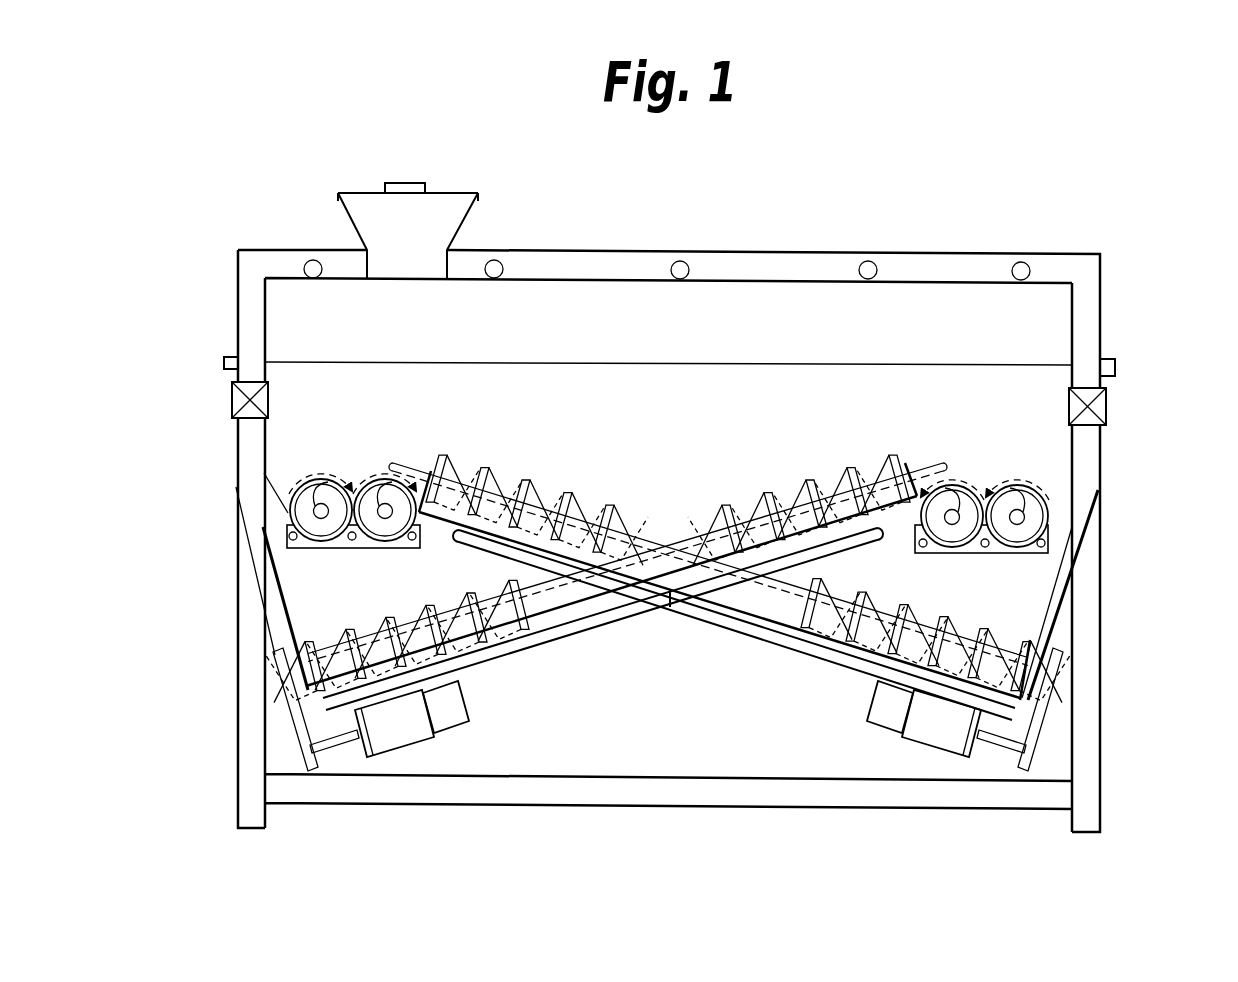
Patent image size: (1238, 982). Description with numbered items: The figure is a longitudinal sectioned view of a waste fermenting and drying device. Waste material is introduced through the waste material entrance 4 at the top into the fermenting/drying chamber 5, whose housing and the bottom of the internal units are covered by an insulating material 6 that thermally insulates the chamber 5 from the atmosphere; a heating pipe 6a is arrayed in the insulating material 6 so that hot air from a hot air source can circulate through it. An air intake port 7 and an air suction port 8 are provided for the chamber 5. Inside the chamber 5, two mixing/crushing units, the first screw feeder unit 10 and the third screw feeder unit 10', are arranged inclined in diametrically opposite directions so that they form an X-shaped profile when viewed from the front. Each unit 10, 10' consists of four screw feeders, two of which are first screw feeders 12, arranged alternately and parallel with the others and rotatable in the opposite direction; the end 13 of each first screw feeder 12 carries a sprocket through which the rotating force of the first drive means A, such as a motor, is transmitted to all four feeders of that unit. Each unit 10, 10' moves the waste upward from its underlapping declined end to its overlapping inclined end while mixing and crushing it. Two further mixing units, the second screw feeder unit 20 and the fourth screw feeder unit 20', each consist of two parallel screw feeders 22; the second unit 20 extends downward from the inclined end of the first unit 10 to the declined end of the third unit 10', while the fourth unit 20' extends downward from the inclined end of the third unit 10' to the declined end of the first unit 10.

The waste material entrance 4 is at (462, 193).
The fermenting/drying chamber 5 is at (703, 400).
The insulating material 6 is at (1092, 308).
The heating pipe 6a is at (1021, 262).
The air intake port 7 is at (1097, 407).
The air suction port 8 is at (238, 402).
The first screw feeder unit 10 is at (627, 551).
The third screw feeder unit 10' is at (708, 530).
The first screw feeder 12 is at (547, 490).
The end of first screw feeder 13 is at (812, 485).
The second screw feeder unit 20 is at (984, 464).
The fourth screw feeder unit 20' is at (356, 469).
The screw feeder 22 is at (333, 481).
The first drive means A is at (412, 740).